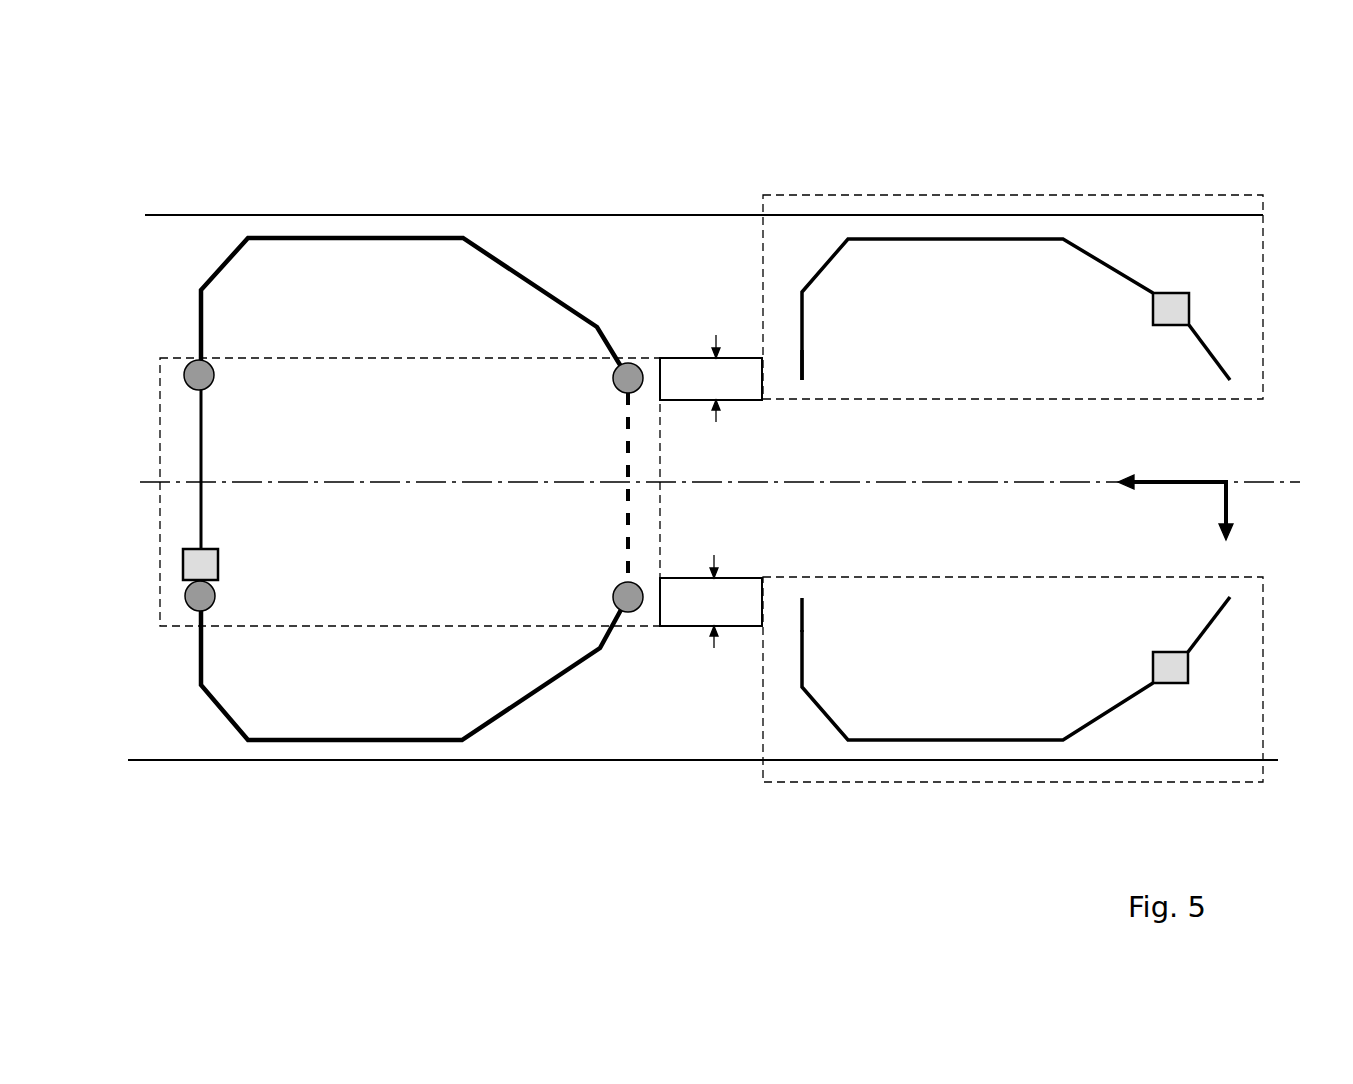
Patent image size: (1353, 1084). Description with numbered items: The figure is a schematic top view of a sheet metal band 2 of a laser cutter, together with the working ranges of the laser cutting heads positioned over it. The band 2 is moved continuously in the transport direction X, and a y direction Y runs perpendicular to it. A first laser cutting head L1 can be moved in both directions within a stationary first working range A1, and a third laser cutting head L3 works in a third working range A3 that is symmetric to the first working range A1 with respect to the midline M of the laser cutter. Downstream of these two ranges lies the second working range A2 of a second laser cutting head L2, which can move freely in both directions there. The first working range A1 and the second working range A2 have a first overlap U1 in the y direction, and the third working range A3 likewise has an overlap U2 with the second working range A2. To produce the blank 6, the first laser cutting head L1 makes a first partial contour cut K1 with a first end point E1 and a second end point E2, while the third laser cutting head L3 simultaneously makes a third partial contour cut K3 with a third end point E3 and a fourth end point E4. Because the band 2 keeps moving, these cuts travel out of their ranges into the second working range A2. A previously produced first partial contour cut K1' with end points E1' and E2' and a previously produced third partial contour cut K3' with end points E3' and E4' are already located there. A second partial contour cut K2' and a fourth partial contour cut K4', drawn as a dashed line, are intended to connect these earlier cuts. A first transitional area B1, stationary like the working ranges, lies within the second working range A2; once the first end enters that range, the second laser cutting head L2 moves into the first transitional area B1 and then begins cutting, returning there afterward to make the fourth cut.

The sheet metal band 2 is at (730, 243).
The blank 6 is at (368, 476).
The first working range A1 is at (1208, 195).
The second working range A2 is at (520, 355).
The third working range A3 is at (1263, 650).
The midline M is at (1265, 482).
The transport direction X is at (1172, 464).
The y direction Y is at (1242, 510).
The first overlap U1 is at (711, 359).
The overlap U2 is at (711, 581).
The first partial contour cut K1 is at (1012, 309).
The third partial contour cut K3 is at (1012, 691).
The previously produced first partial contour cut K1' is at (414, 250).
The second partial contour cut K2' is at (154, 485).
The previously produced third partial contour cut K3' is at (414, 712).
The fourth partial contour cut K4' is at (540, 487).
The first laser cutting head L1 is at (1153, 310).
The second laser cutting head L2 is at (218, 560).
The third laser cutting head L3 is at (1190, 675).
The first end point E1 is at (861, 357).
The second end point E2 is at (1171, 360).
The third end point E3 is at (861, 622).
The fourth end point E4 is at (1164, 624).
The first end point of previously produced first partial contour cut E1' is at (162, 336).
The second end point of previously produced first partial contour cut E2' is at (592, 339).
The third end point of previously produced third partial contour cut E3' is at (162, 639).
The fourth end point of previously produced third partial contour cut E4' is at (651, 648).
The first transitional area B1 is at (626, 380).